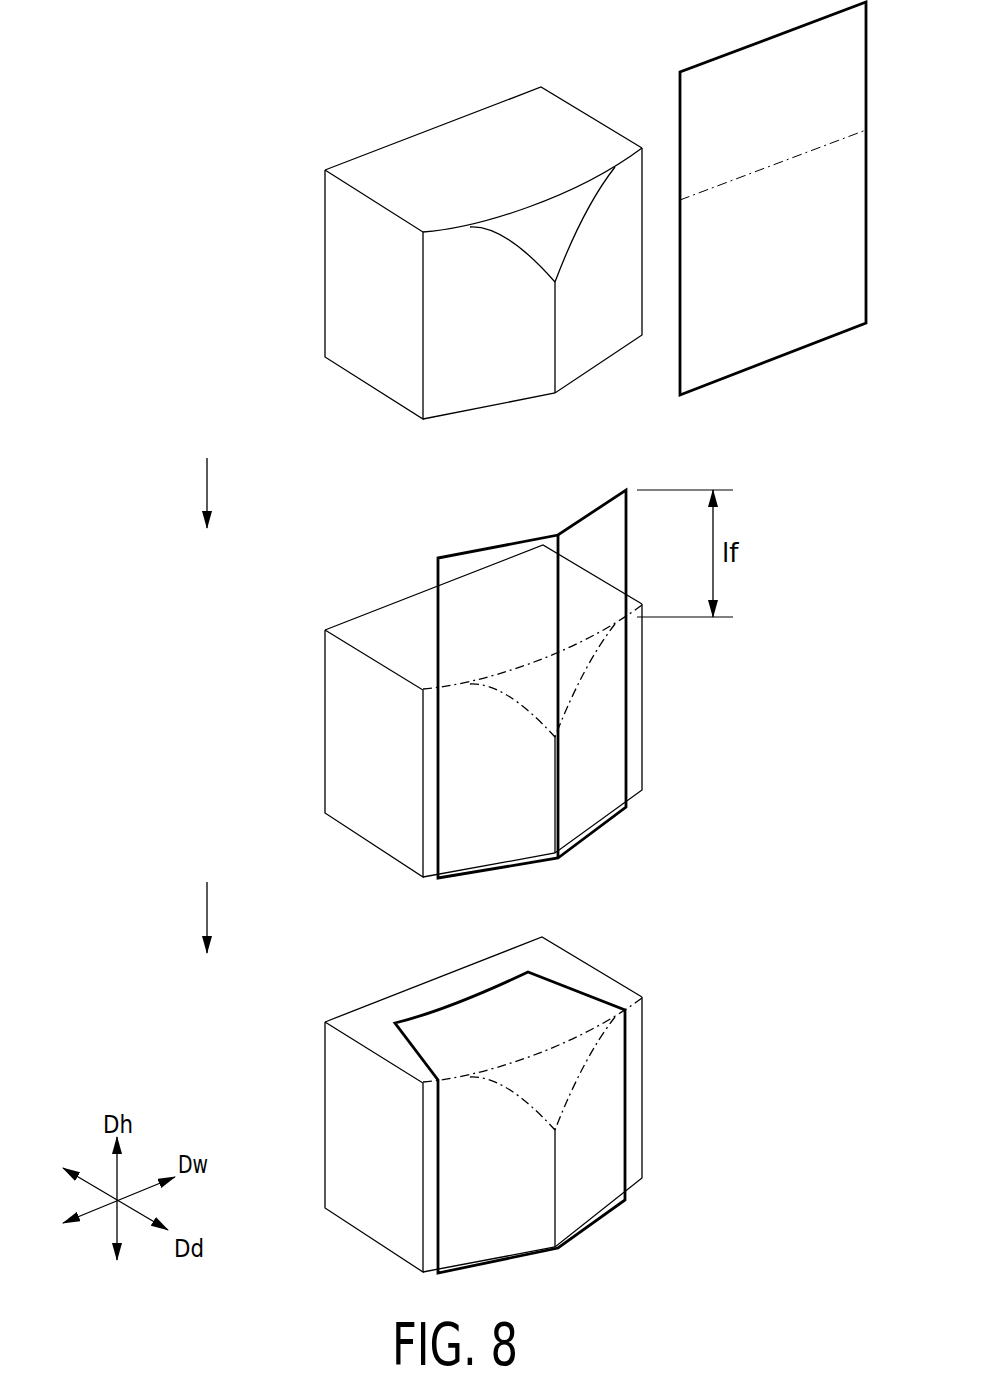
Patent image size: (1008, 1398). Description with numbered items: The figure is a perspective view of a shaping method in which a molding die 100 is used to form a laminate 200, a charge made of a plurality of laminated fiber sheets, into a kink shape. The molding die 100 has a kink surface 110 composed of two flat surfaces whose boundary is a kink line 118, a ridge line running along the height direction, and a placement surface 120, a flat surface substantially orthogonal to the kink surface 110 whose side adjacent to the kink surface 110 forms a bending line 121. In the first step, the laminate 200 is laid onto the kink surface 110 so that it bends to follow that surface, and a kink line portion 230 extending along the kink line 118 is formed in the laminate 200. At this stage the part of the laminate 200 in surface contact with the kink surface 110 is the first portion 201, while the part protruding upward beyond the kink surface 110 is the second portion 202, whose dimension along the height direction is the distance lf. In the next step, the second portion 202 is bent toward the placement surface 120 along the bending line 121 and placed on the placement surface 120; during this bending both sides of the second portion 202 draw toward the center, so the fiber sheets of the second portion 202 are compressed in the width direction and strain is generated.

The molding die 100 is at (485, 670).
The kink surface 110 is at (592, 353).
The kink line 118 is at (553, 342).
The placement surface 120 is at (413, 167).
The bending line 121 is at (508, 207).
The laminate 200 is at (610, 636).
The first portion 201 is at (792, 311).
The second portion 202 is at (792, 131).
The kink line portion 230 is at (553, 705).